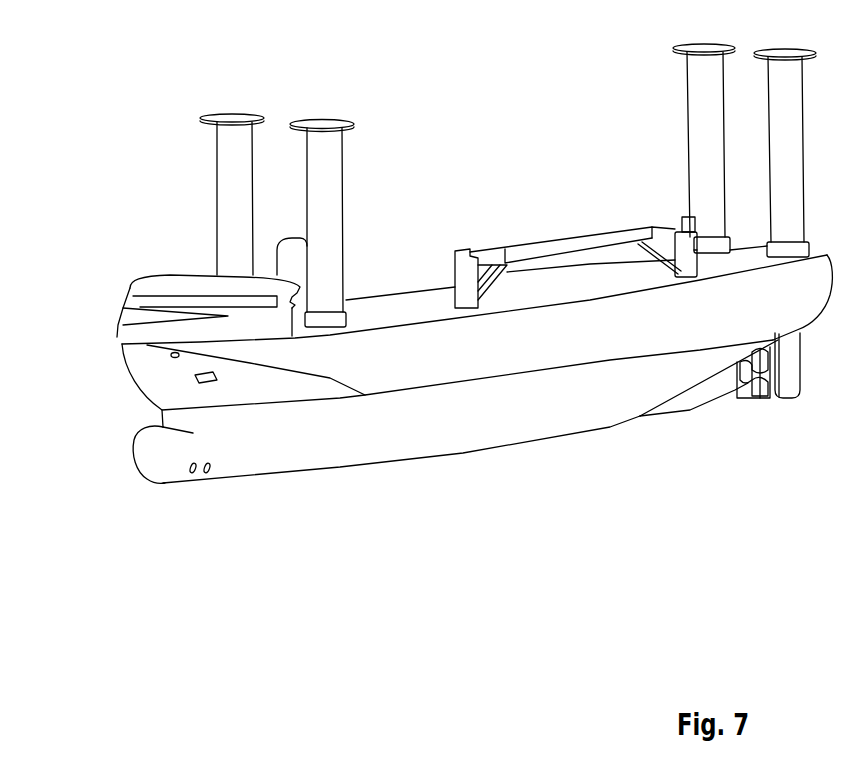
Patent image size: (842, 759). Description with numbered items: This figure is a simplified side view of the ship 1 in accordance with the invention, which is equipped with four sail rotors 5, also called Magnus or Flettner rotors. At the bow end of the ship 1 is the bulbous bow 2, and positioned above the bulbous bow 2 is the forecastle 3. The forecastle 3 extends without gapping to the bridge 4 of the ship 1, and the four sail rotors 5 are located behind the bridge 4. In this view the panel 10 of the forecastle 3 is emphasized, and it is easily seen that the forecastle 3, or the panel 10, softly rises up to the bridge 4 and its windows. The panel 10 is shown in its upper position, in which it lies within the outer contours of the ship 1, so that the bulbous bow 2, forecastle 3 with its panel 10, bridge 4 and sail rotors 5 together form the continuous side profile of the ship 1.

The ship 1 is at (285, 448).
The bulbous bow 2 is at (165, 465).
The forecastle 3 is at (125, 345).
The bridge 4 is at (145, 299).
The sail rotors 5 is at (237, 148).
The panel 10 is at (140, 321).